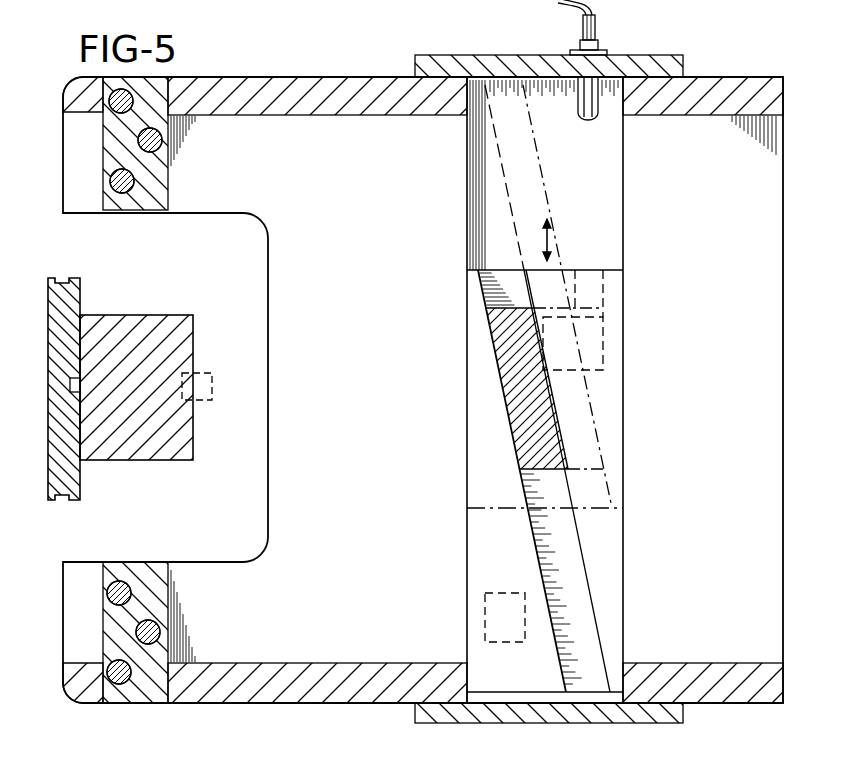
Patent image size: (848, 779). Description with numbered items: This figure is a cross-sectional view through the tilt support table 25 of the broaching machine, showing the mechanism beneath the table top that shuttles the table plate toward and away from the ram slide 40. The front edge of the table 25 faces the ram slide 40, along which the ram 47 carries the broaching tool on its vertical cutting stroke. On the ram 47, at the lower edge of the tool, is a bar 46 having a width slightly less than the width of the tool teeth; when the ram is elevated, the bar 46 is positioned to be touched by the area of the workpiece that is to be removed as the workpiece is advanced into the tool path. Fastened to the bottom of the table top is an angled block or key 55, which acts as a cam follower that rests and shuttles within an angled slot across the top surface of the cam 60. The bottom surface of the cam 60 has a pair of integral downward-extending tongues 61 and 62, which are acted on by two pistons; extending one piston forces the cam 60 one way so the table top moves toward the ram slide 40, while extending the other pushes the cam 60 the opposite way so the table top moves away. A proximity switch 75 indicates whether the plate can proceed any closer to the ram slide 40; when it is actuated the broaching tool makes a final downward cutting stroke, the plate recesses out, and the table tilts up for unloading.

The table 25 is at (303, 77).
The ram slide 40 is at (80, 297).
The bar 46 is at (207, 402).
The ram 47 is at (170, 317).
The angled block or key 55 is at (497, 346).
The cam 60 is at (470, 520).
The tongue 61 is at (486, 611).
The tongue 62 is at (614, 318).
The proximity switch 75 is at (603, 46).